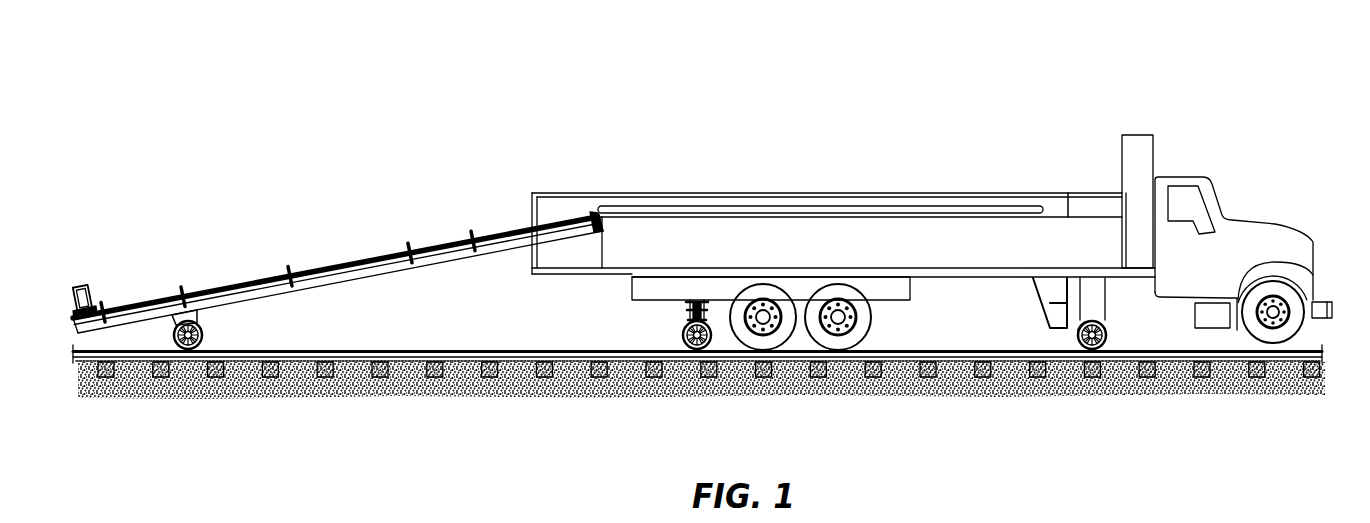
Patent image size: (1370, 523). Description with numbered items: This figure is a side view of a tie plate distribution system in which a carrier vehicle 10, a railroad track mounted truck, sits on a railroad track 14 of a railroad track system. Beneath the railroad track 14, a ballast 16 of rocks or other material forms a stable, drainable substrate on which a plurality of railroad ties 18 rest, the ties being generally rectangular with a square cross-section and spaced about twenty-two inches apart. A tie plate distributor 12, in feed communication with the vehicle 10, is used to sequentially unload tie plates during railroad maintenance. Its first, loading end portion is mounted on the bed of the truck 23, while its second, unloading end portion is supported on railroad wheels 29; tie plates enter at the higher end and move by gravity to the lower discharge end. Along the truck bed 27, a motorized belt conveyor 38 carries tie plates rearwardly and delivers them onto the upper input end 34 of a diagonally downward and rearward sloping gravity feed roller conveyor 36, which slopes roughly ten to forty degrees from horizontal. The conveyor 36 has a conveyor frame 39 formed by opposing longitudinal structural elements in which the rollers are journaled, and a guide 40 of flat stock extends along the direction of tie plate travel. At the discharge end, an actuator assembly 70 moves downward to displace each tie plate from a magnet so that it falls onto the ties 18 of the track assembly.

The carrier vehicle 10 is at (797, 93).
The tie plate distributor 12 is at (547, 114).
The railroad track 14 is at (1300, 350).
The ballast 16 is at (840, 394).
The railroad ties 18 is at (486, 378).
The truck 23 is at (1236, 158).
The truck bed 27 is at (1068, 192).
The railroad wheels 29 is at (187, 350).
The upper input end 34 is at (588, 212).
The conveyor 36 is at (373, 249).
The belt conveyor 38 is at (690, 190).
The conveyor frame 39 is at (422, 278).
The guide 40 is at (177, 280).
The actuator assembly 70 is at (105, 259).